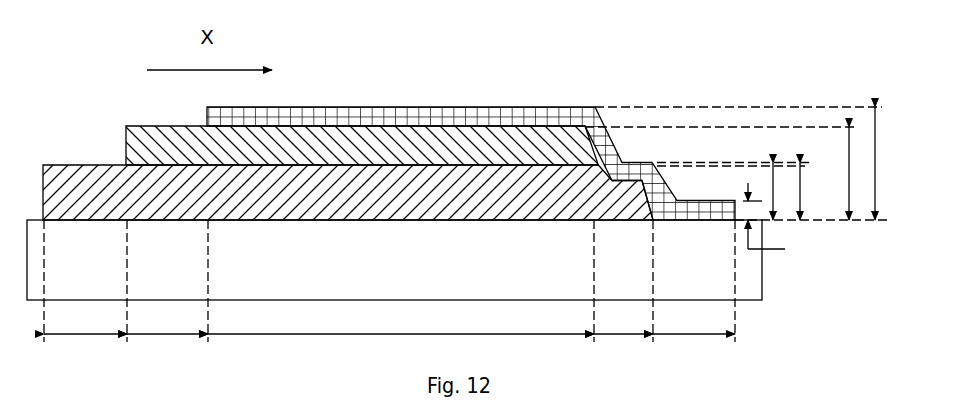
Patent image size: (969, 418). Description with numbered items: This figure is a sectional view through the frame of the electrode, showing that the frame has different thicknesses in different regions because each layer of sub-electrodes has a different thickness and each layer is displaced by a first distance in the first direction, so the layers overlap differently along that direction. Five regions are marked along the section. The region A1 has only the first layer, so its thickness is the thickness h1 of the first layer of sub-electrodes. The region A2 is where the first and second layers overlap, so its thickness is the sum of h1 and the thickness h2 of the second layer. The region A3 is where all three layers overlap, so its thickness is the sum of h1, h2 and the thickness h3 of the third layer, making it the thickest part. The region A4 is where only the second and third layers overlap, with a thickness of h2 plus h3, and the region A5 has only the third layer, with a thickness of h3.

The region A1 is at (85, 281).
The region A2 is at (167, 281).
The region A3 is at (401, 281).
The region A4 is at (623, 281).
The region A5 is at (694, 281).
The thickness of the first layer of sub-electrodes h1 is at (834, 163).
The thickness of the second layer of sub-electrodes h2 is at (827, 191).
The thickness of the third layer of sub-electrodes h3 is at (767, 217).